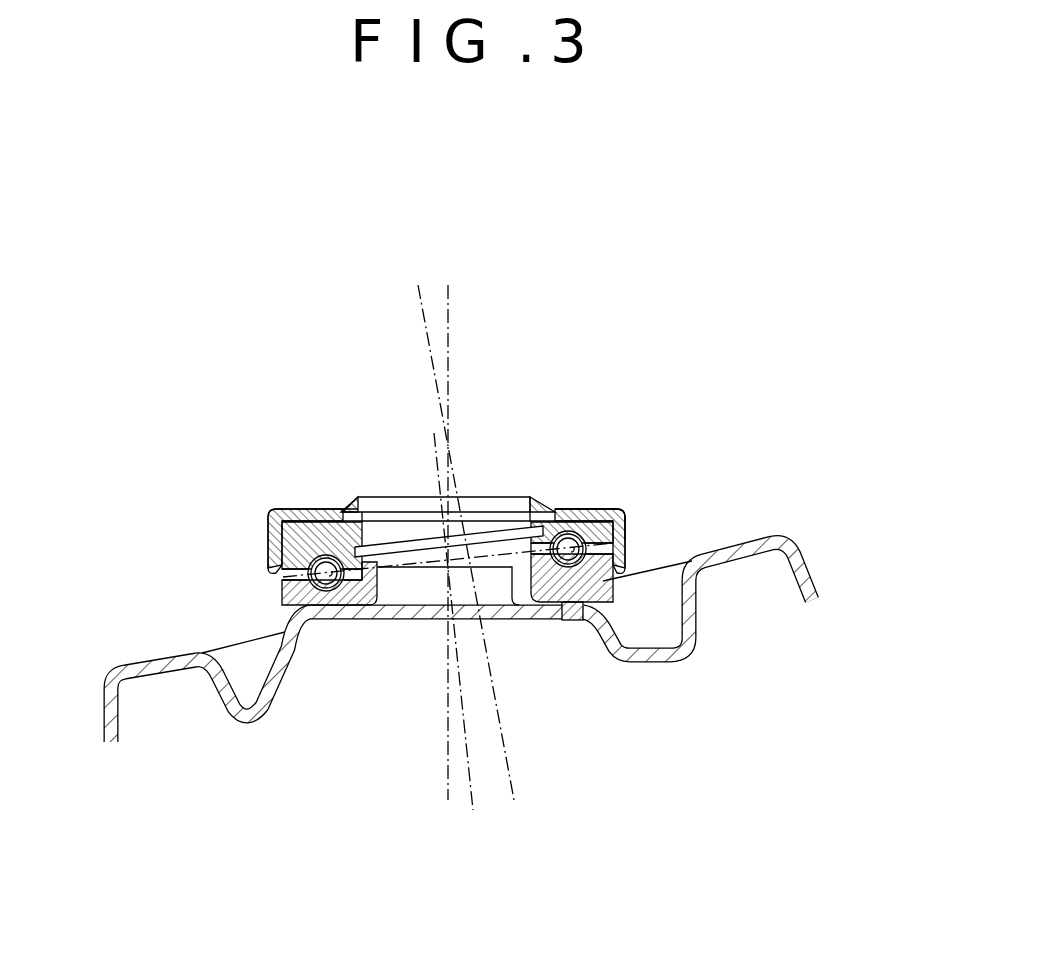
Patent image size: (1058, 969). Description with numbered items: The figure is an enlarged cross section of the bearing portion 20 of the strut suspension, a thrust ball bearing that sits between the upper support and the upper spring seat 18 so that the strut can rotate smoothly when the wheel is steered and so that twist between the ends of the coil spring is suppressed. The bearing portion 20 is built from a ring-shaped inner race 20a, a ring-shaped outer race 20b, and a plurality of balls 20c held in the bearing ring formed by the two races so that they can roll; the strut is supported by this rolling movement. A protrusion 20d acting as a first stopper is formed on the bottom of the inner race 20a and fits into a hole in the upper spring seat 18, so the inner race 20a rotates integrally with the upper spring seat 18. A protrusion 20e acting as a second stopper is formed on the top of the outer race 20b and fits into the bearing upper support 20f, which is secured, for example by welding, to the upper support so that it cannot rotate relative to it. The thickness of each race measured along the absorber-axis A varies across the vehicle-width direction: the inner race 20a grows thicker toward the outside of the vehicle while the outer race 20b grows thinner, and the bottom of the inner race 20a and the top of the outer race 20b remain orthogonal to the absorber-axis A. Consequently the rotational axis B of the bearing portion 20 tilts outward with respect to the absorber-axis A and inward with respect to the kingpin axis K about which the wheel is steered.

The upper spring seat 18 is at (800, 563).
The bearing portion 20 is at (262, 530).
The inner race 20a is at (303, 597).
The outer race 20b is at (300, 515).
The balls 20c is at (325, 573).
The protrusion 20d is at (572, 620).
The protrusion 20e is at (323, 515).
The bearing upper support 20f is at (592, 508).
The absorber-axis A is at (448, 342).
The rotational axis B is at (468, 767).
The kingpin axis K is at (433, 375).